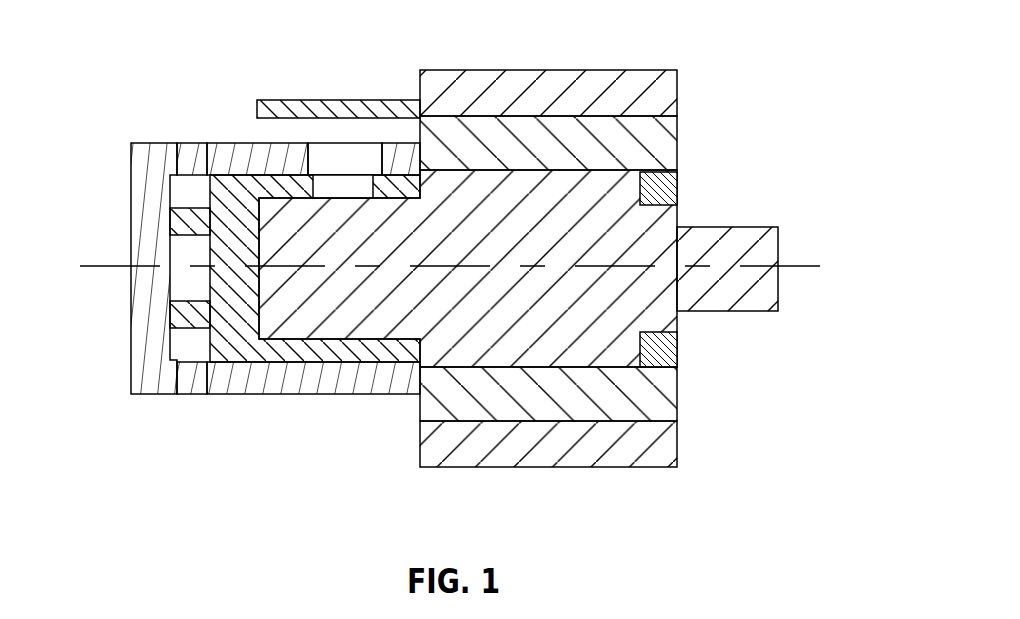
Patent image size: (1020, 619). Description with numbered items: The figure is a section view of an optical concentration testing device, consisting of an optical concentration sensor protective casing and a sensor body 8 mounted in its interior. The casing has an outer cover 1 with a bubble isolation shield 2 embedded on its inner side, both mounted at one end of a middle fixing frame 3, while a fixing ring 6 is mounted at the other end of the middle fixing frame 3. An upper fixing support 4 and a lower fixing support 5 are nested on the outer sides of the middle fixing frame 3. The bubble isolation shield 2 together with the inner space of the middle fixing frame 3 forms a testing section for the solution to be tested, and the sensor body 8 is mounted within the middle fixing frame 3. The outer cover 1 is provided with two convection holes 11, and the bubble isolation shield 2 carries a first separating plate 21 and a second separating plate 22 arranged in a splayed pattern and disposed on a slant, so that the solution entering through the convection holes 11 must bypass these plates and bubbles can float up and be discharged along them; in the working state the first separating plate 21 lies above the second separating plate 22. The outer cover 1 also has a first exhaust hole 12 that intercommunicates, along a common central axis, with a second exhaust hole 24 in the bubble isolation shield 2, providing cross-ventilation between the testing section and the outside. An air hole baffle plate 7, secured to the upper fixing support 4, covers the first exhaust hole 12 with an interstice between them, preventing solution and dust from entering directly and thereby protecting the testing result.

The outer cover 1 is at (112, 178).
The convection holes 11 is at (195, 150).
The first exhaust hole 12 is at (350, 160).
The bubble isolation shield 2 is at (190, 346).
The first separating plate 21 is at (182, 226).
The second separating plate 22 is at (183, 312).
The second exhaust hole 24 is at (337, 188).
The middle fixing frame 3 is at (657, 140).
The upper fixing support 4 is at (613, 82).
The lower fixing support 5 is at (628, 448).
The fixing ring 6 is at (660, 190).
The air hole baffle plate 7 is at (358, 108).
The sensor body 8 is at (735, 320).